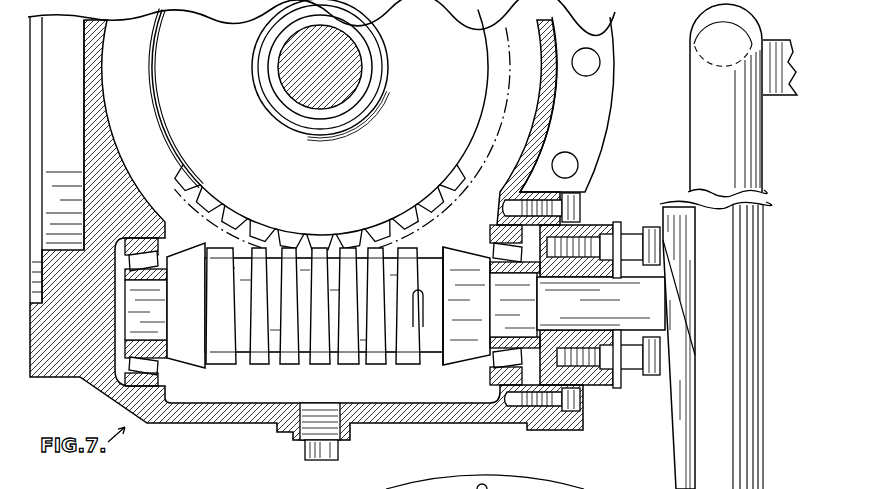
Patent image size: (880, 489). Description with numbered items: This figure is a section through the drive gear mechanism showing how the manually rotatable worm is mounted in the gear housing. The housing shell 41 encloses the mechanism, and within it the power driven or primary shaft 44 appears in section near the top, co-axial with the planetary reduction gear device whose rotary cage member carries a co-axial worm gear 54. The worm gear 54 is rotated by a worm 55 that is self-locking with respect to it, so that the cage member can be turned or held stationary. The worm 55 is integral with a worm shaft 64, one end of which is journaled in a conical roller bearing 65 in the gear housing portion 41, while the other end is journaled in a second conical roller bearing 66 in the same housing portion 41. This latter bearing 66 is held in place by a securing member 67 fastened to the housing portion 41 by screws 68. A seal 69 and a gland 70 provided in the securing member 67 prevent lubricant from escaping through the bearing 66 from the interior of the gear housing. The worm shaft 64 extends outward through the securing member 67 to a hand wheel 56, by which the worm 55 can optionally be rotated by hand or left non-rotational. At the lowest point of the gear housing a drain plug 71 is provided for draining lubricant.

The housing shell 41 is at (550, 110).
The primary shaft 44 is at (359, 80).
The worm gear 54 is at (423, 235).
The worm 55 is at (328, 305).
The hand wheel 56 is at (765, 447).
The worm shaft 64 is at (601, 303).
The conical roller bearing 65 is at (157, 309).
The conical roller bearing 66 is at (498, 364).
The securing member 67 is at (584, 228).
The screws 68 is at (580, 213).
The seal 69 is at (600, 250).
The gland 70 is at (619, 250).
The drain plug 71 is at (338, 448).